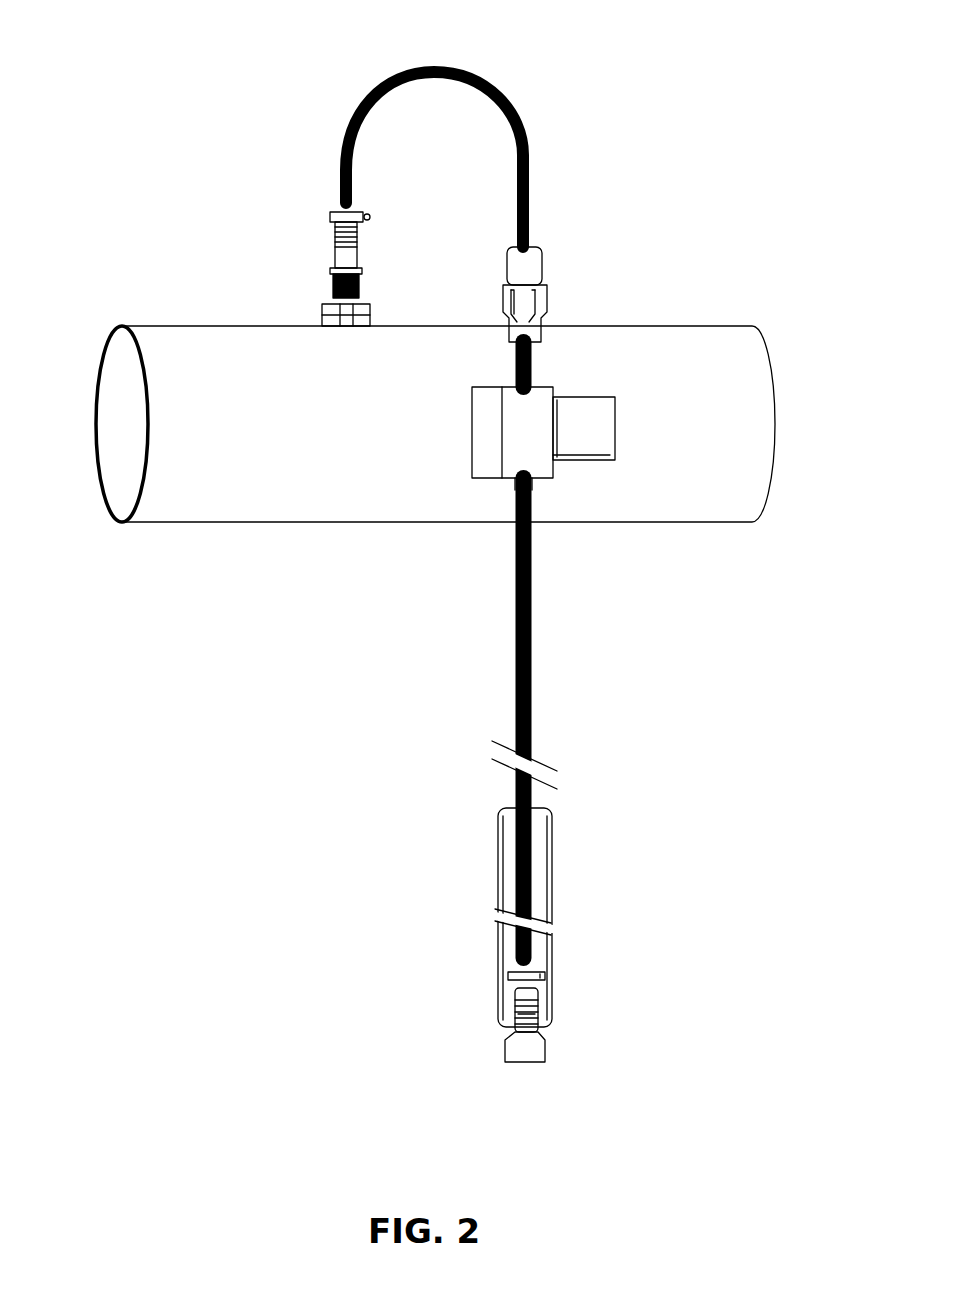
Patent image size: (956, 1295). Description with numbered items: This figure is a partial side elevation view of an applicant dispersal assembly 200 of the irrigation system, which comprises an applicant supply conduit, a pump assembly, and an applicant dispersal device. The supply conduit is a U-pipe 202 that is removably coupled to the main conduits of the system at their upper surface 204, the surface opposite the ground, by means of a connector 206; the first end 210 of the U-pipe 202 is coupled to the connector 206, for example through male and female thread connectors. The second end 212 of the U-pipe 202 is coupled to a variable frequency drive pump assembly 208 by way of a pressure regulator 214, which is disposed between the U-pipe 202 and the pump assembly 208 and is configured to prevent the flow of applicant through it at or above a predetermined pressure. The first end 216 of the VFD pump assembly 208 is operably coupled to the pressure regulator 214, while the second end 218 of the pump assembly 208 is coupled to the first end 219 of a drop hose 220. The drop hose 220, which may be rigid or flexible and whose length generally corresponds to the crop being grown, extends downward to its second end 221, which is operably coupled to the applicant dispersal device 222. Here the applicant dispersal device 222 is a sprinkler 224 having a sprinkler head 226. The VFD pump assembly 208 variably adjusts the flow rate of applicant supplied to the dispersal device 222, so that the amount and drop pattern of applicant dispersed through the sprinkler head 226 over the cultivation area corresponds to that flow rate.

The applicant dispersal assembly 200 is at (268, 67).
The U-pipe 202 is at (432, 72).
The upper surface 204 is at (142, 325).
The connector 206 is at (360, 243).
The VFD pump assembly 208 is at (522, 443).
The first end 210 is at (340, 202).
The second end 212 is at (510, 250).
The pressure regulator 214 is at (522, 308).
The first end 216 is at (540, 392).
The second end 218 is at (510, 480).
The first end 219 is at (534, 482).
The drop hose 220 is at (533, 700).
The second end 221 is at (518, 955).
The applicant dispersal device 222 is at (540, 1005).
The sprinkler 224 is at (513, 1013).
The sprinkler head 226 is at (525, 1063).